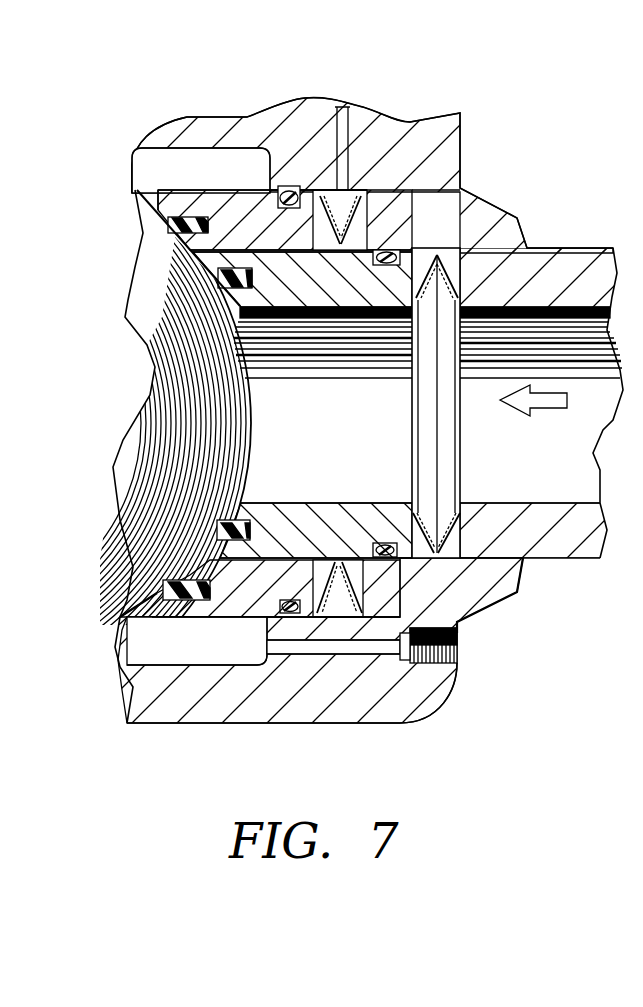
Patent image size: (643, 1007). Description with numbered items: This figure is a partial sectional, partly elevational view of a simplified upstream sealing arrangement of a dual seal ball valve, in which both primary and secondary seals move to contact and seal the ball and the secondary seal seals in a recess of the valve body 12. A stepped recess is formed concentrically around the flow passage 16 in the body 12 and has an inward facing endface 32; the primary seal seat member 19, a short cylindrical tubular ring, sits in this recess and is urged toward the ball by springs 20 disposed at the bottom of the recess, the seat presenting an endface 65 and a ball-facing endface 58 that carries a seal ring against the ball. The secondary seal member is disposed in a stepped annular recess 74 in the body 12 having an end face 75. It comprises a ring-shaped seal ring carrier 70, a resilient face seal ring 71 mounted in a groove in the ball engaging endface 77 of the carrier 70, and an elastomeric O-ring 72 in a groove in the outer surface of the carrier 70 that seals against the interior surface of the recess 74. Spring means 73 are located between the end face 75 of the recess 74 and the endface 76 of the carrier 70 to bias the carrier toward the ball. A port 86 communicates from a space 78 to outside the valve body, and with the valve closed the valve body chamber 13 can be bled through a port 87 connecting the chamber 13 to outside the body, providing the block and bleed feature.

The valve body 12 is at (460, 133).
The valve body chamber 13 is at (133, 645).
The flow passage 16 is at (543, 503).
The seal seat member 19 is at (262, 502).
The springs 20 is at (445, 515).
The inward facing endface 32 is at (412, 427).
The endface of seat member 58 is at (232, 300).
The endface of seat 65 is at (415, 462).
The seal ring carrier 70 is at (190, 193).
The face seal ring 71 is at (175, 230).
The O-ring 72 is at (292, 196).
The spring means 73 is at (367, 213).
The stepped annular recess 74 is at (347, 190).
The end face of stepped annular recess 75 is at (367, 580).
The endface of seal ring carrier 76 is at (333, 190).
The ball engaging endface 77 is at (218, 268).
The space 78 is at (323, 566).
The port 86 is at (344, 105).
The port 87 is at (457, 660).